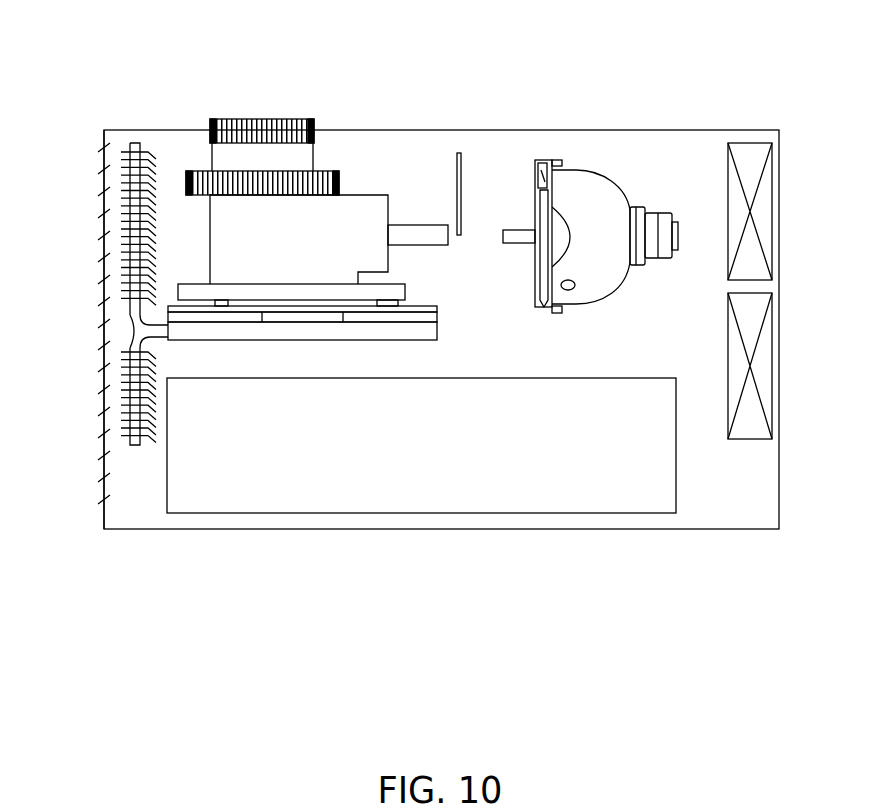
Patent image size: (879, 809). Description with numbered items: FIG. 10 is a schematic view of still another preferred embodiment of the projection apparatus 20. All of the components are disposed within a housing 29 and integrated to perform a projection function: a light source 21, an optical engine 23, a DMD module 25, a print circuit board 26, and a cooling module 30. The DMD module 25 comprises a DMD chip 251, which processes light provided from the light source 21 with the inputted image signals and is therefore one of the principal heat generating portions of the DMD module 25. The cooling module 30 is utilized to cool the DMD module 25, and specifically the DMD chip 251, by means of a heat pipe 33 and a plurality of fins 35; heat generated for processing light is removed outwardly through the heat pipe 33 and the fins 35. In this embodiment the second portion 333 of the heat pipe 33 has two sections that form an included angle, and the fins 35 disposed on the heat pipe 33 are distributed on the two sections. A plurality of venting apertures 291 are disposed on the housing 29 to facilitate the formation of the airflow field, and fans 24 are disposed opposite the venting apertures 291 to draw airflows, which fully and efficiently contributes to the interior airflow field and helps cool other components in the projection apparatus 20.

The projection apparatus 20 is at (175, 53).
The light source 21 is at (590, 168).
The optical engine 23 is at (323, 176).
The fans 24 is at (789, 291).
The DMD module 25 is at (335, 287).
The DMD chip 251 is at (351, 326).
The print circuit board 26 is at (402, 494).
The housing 29 is at (92, 294).
The venting apertures 291 is at (61, 301).
The cooling module 30 is at (302, 347).
The heat pipe 33 is at (105, 335).
The fins 35 is at (163, 229).
The second portion 333 is at (89, 329).